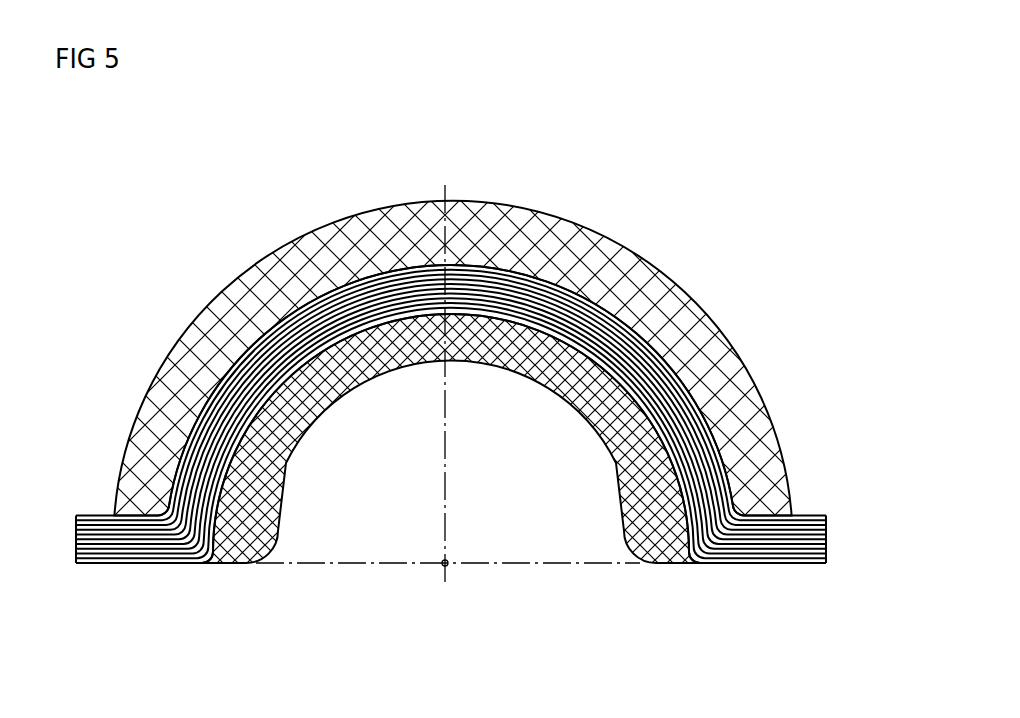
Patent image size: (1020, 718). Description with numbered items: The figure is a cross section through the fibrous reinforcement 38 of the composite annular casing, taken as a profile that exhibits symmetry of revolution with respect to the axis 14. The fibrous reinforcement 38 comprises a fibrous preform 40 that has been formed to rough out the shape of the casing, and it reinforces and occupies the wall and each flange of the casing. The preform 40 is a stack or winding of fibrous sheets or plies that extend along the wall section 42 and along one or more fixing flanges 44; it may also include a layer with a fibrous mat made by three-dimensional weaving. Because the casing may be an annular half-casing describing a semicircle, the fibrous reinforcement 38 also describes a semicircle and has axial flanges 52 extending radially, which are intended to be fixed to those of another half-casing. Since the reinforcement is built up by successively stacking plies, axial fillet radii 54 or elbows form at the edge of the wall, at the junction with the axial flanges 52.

The fibrous reinforcement 38 is at (451, 384).
The fibrous preform 40 is at (278, 172).
The wall section 42 is at (308, 343).
The fixing flange 44 is at (193, 340).
The axial flange 52 is at (131, 564).
The axial fillet radius 54 is at (232, 564).
The axis 14 is at (449, 566).